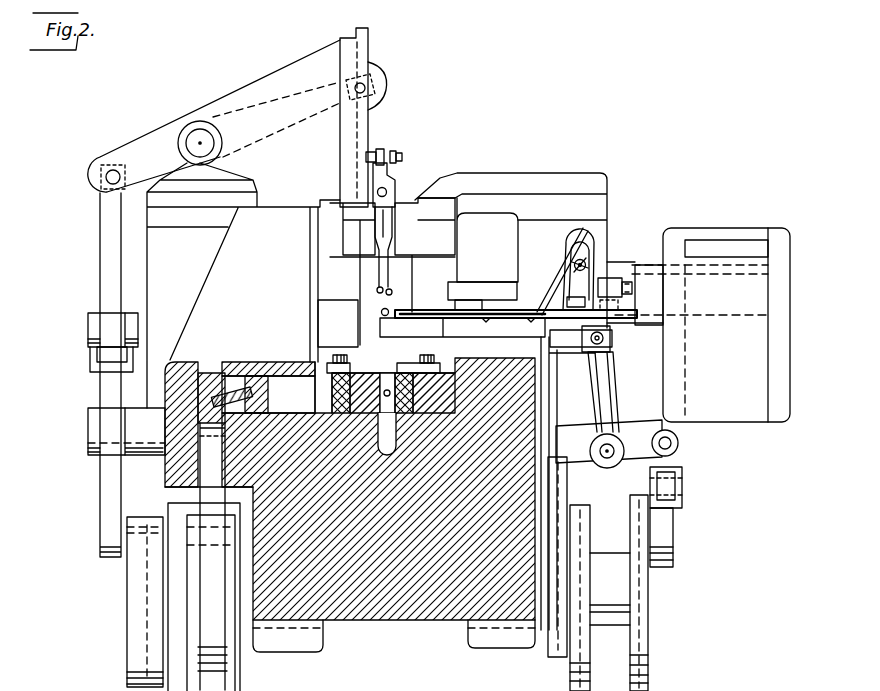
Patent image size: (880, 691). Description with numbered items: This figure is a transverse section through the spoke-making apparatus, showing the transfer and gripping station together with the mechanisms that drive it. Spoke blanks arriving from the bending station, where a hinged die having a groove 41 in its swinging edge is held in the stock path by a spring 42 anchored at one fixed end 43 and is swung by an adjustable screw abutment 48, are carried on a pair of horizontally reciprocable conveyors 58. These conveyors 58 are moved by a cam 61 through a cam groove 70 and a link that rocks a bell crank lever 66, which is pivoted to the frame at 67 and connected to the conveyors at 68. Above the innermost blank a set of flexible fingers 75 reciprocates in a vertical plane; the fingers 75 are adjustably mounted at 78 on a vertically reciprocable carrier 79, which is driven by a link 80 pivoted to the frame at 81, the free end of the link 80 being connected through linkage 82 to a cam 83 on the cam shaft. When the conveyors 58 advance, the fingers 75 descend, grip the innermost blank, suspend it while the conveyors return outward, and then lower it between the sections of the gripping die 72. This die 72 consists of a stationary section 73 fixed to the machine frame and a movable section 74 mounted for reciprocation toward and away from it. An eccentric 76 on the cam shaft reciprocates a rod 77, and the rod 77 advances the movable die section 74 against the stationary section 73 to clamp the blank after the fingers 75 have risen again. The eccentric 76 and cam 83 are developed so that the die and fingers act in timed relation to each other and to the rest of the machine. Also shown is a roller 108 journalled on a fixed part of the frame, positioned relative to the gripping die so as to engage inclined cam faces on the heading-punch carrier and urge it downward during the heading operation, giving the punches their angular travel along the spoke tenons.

The groove 41 is at (573, 297).
The spring 42 is at (575, 245).
The fixed end of spring 43 is at (592, 260).
The abutment 48 is at (694, 325).
The conveyors 58 is at (402, 323).
The cam 61 is at (651, 603).
The bell crank lever 66 is at (616, 404).
The pivotal connection of bell crank lever 67 is at (607, 468).
The pivotal connection to conveyors 68 is at (610, 338).
The cam groove 70 is at (652, 627).
The gripping die 72 is at (417, 383).
The stationary die section 73 is at (435, 370).
The movable die section 74 is at (365, 377).
The flexible fingers 75 is at (382, 270).
The eccentric 76 is at (202, 582).
The rod 77 is at (207, 448).
The adjustable mounting 78 is at (393, 187).
The carrier 79 is at (377, 115).
The link 80 is at (155, 147).
The pivotal connection of link 81 is at (205, 137).
The linkage 82 is at (85, 340).
The cam 83 is at (132, 570).
The roller 108 is at (350, 524).